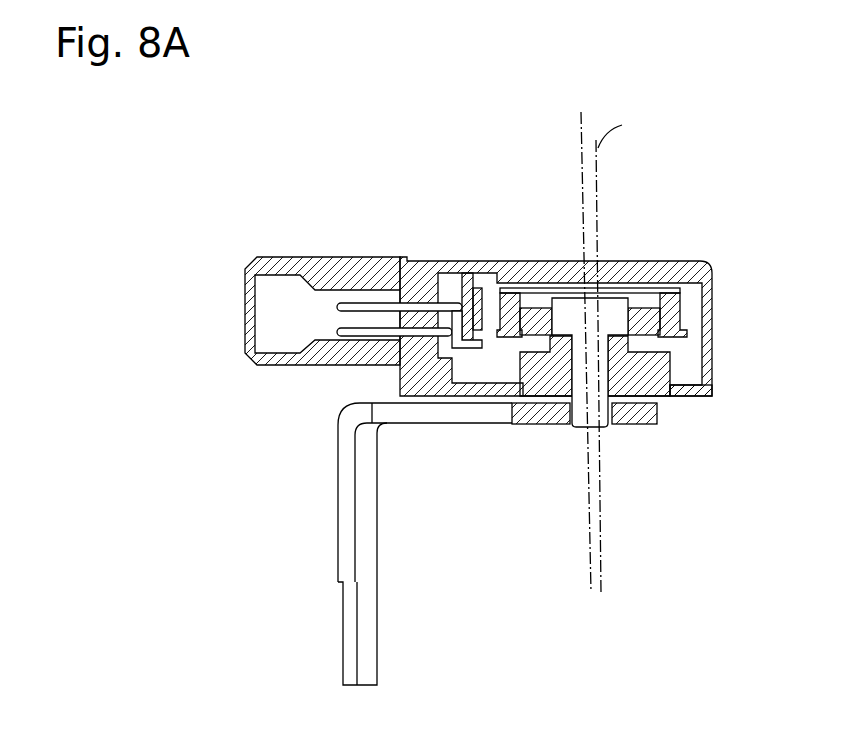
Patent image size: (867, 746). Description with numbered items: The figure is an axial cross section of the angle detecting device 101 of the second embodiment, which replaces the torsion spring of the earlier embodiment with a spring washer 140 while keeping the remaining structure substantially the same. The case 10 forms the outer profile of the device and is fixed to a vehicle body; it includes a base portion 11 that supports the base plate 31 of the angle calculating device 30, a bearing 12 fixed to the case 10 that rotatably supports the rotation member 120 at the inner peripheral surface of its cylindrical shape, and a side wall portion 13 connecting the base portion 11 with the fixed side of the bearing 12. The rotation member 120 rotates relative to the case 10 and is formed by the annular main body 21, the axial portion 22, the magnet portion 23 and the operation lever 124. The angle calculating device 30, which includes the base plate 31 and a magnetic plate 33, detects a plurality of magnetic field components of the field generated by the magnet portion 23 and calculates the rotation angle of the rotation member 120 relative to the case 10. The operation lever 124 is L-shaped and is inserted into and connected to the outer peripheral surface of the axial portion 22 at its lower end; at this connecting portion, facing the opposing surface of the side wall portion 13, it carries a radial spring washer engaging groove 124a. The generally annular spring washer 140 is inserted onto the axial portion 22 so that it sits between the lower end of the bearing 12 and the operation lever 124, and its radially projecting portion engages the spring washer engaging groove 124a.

The angle detecting device 101 is at (252, 166).
The case 10 is at (350, 220).
The base portion 11 is at (447, 268).
The bearing 12 is at (618, 410).
The side wall portion 13 is at (693, 399).
The annular main body 21 is at (535, 300).
The axial portion 22 is at (583, 425).
The magnet portion 23 is at (667, 290).
The angle calculating device 30 is at (490, 292).
The base plate 31 is at (467, 265).
The magnetic plate 33 is at (491, 311).
The rotation member 120 is at (647, 288).
The operation lever 124 is at (378, 532).
The spring washer engaging groove 124a is at (657, 402).
The spring washer 140 is at (548, 401).